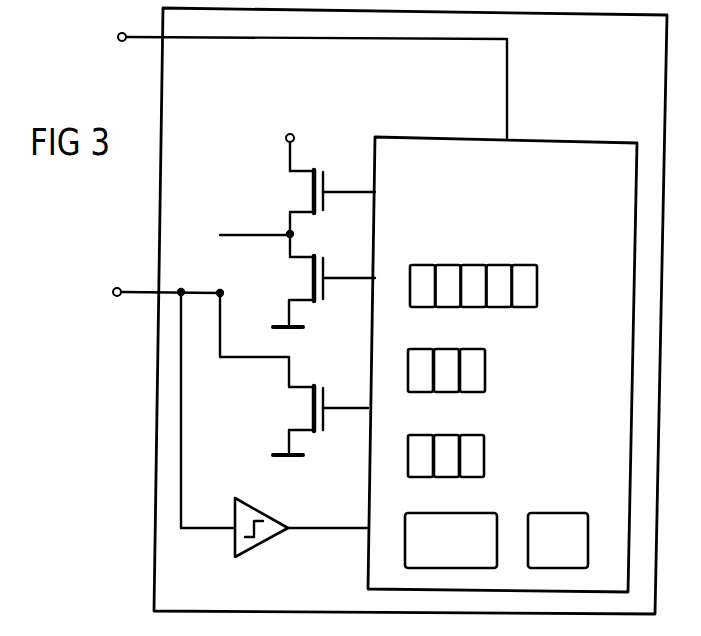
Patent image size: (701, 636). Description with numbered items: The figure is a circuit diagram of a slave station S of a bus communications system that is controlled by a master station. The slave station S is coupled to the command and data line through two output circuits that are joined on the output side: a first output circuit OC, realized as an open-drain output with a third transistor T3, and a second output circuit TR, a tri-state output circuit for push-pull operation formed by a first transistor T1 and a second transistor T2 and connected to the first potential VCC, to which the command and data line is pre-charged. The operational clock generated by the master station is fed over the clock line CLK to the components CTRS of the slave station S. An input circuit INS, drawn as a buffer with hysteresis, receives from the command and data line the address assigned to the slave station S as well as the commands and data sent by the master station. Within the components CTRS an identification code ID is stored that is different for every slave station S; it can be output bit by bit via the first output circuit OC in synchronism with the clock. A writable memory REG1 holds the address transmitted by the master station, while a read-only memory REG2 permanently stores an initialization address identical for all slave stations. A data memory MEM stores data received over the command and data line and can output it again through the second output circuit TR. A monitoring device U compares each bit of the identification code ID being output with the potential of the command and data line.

The slave station S is at (155, 413).
The clock line CLK is at (287, 79).
The second output circuit TR is at (337, 100).
The first potential VCC is at (290, 136).
The first transistor T1 is at (299, 193).
The second transistor T2 is at (296, 281).
The first output circuit OC is at (294, 408).
The third transistor T3 is at (281, 420).
The input circuit INS is at (259, 543).
The components CTRS is at (502, 364).
The identification code ID is at (540, 288).
The memory REG1 is at (488, 371).
The read-only memory REG2 is at (488, 456).
The data memory MEM is at (451, 540).
The monitoring device U is at (558, 540).